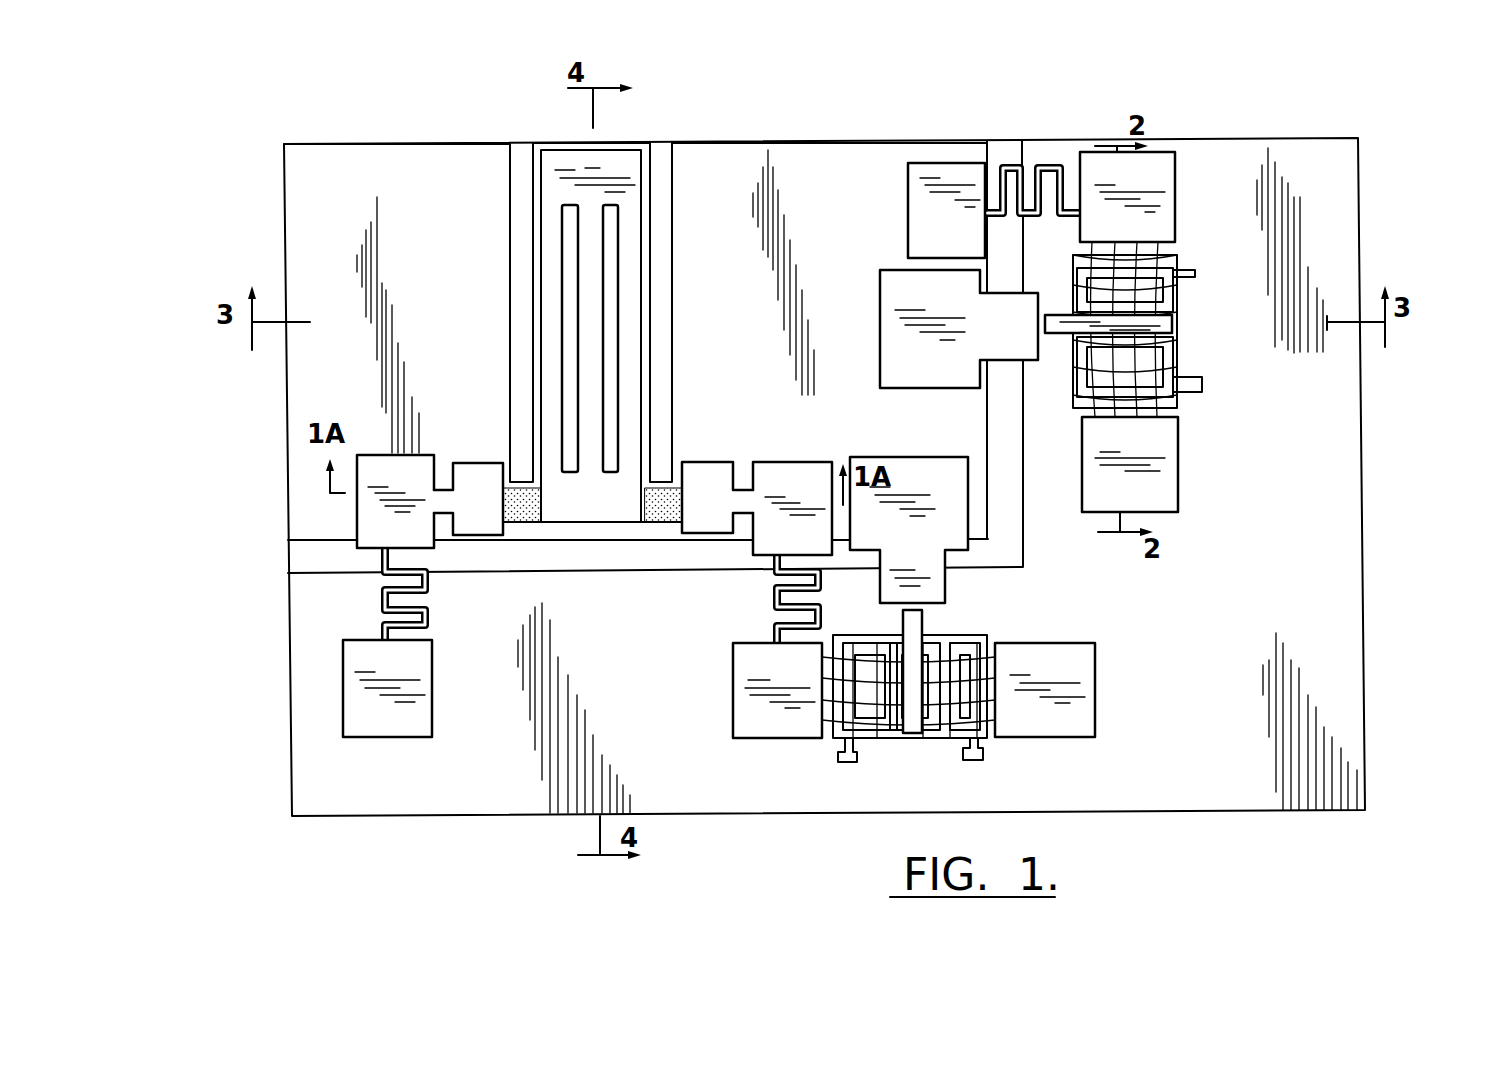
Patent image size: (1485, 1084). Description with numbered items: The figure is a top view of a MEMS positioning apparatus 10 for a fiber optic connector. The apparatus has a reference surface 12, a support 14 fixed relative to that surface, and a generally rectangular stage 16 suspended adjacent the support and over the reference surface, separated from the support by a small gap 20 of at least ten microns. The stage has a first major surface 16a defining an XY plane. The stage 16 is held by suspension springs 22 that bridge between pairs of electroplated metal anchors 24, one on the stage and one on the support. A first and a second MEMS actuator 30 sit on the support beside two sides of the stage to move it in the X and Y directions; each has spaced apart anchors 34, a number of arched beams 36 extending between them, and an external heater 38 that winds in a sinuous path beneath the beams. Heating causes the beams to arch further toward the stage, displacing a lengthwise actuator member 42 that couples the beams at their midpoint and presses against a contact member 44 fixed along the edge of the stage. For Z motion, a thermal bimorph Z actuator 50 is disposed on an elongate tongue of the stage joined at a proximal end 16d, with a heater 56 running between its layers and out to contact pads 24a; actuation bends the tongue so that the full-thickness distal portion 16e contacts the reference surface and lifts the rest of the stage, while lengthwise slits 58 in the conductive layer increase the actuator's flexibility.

The MEMS positioning apparatus 10 is at (1058, 85).
The reference surface 12 is at (1005, 437).
The support 14 is at (1297, 148).
The stage 16 is at (840, 150).
The first major surface 16a is at (342, 186).
The proximal end 16d is at (680, 487).
The distal portion 16e is at (632, 145).
The gap 20 is at (325, 560).
The suspension springs 22 is at (1045, 165).
The anchors 24 is at (357, 518).
The contact pads 24a is at (480, 470).
The MEMS actuator 30 is at (1205, 427).
The anchors 34 is at (1175, 152).
The arched beams 36 is at (1202, 388).
The external heater 38 is at (1167, 355).
The actuator member 42 is at (1180, 267).
The contact member 44 is at (880, 305).
The Z actuator 50 is at (540, 158).
The heater 56 is at (535, 512).
The slits 58 is at (612, 260).